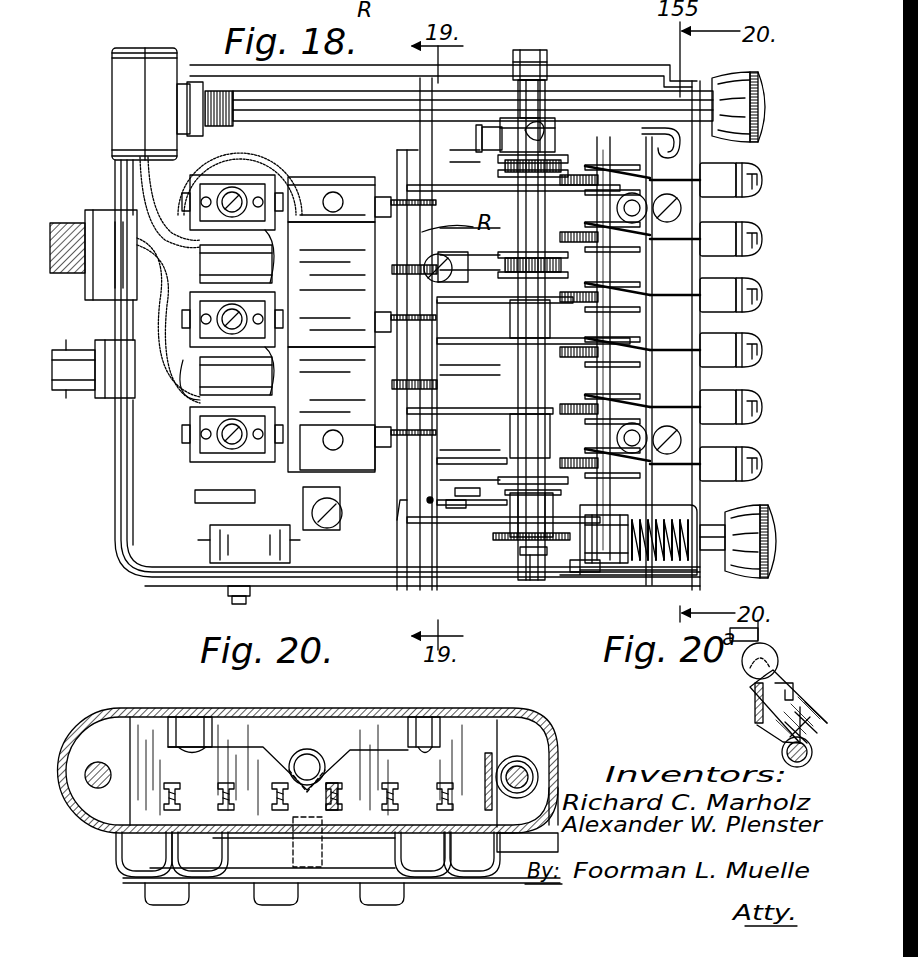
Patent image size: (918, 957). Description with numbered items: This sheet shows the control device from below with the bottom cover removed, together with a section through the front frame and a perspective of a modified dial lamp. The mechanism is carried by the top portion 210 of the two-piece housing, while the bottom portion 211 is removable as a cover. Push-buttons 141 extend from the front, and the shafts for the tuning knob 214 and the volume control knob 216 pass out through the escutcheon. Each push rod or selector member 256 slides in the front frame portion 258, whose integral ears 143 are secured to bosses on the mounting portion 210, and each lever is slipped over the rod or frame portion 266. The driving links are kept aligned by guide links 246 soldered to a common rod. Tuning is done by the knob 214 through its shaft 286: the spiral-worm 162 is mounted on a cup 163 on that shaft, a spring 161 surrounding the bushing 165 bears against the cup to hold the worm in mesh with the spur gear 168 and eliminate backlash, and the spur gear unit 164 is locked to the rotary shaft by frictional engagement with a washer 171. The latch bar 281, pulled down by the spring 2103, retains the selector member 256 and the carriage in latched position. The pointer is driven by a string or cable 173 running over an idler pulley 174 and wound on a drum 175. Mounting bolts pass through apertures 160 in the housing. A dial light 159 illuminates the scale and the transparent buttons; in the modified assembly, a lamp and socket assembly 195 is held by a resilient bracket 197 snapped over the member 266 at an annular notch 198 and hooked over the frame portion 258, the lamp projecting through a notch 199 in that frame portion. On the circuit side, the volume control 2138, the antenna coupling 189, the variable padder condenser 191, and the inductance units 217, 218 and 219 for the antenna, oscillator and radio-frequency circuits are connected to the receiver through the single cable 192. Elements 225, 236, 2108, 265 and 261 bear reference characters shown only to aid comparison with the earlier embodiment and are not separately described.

In FIG. 18, the volume control 2138 is at (130, 62).
In FIG. 18, the cable 192 is at (67, 227).
In FIG. 18, the antenna coupling 189 is at (78, 388).
In FIG. 18, the variable padder condenser 191 is at (227, 548).
In FIG. 18, the inductance unit for R. F. circuit 219 is at (283, 230).
In FIG. 18, the inductance unit for oscillator circuit 218 is at (282, 292).
In FIG. 18, the inductance unit for antenna circuit 217 is at (282, 397).
In FIG. 18, the spring 2103 is at (440, 262).
In FIG. 18, the mounting block 225 is at (350, 481).
In FIG. 18, the latch bar 281 is at (418, 518).
In FIG. 18, the guide link 246 is at (443, 185).
In FIG. 18, the selector member 256 is at (484, 238).
In FIG. 18, the central shaft column 236 is at (540, 447).
In FIG. 18, the washer 171 is at (522, 553).
In FIG. 18, the spur gear unit 164 is at (495, 545).
In FIG. 18, the spur gear 168 is at (507, 547).
In FIG. 18, the bolt 2108 is at (535, 50).
In FIG. 18, the idler pulley 174 is at (497, 140).
In FIG. 18, the string or cable 173 is at (507, 128).
In FIG. 18, the drum 175 is at (543, 133).
In FIG. 18, the apertures 160 is at (625, 208).
In FIG. 18, the push-buttons 141 is at (753, 278).
In FIG. 18, the dial light 159 is at (680, 127).
In FIG. 18, the volume control knob 216 is at (767, 100).
In FIG. 18, the tuning knob 214 is at (763, 578).
In FIG. 18, the spring 161 is at (668, 552).
In FIG. 20, the spring 161 is at (515, 793).
In FIG. 18, the cup 163 is at (607, 555).
In FIG. 18, the bushing 165 is at (648, 553).
In FIG. 18, the spiral-worm 162 is at (580, 562).
In FIG. 20, the spiral-worm 162 is at (530, 755).
In FIG. 20, the top portion of housing 210 is at (293, 708).
In FIG. 20, the integral ears 143 is at (208, 743).
In FIG. 20, the notch 199 is at (287, 763).
In FIG. 20A, the notch 199 is at (757, 685).
In FIG. 20, the lamp and socket assembly 195 is at (327, 752).
In FIG. 20A, the lamp and socket assembly 195 is at (738, 673).
In FIG. 20, the front frame portion 258 is at (362, 753).
In FIG. 20A, the front frame portion 258 is at (760, 702).
In FIG. 20, the terminal clips 265 is at (243, 803).
In FIG. 20, the terminal clip 261 is at (377, 833).
In FIG. 20, the bracket 197 is at (310, 823).
In FIG. 20A, the bracket 197 is at (767, 735).
In FIG. 20, the shaft 286 is at (528, 773).
In FIG. 20, the bottom portion of housing 211 is at (122, 867).
In FIG. 20A, the rod or frame portion 266 is at (753, 727).
In FIG. 20A, the annular notch 198 is at (797, 743).